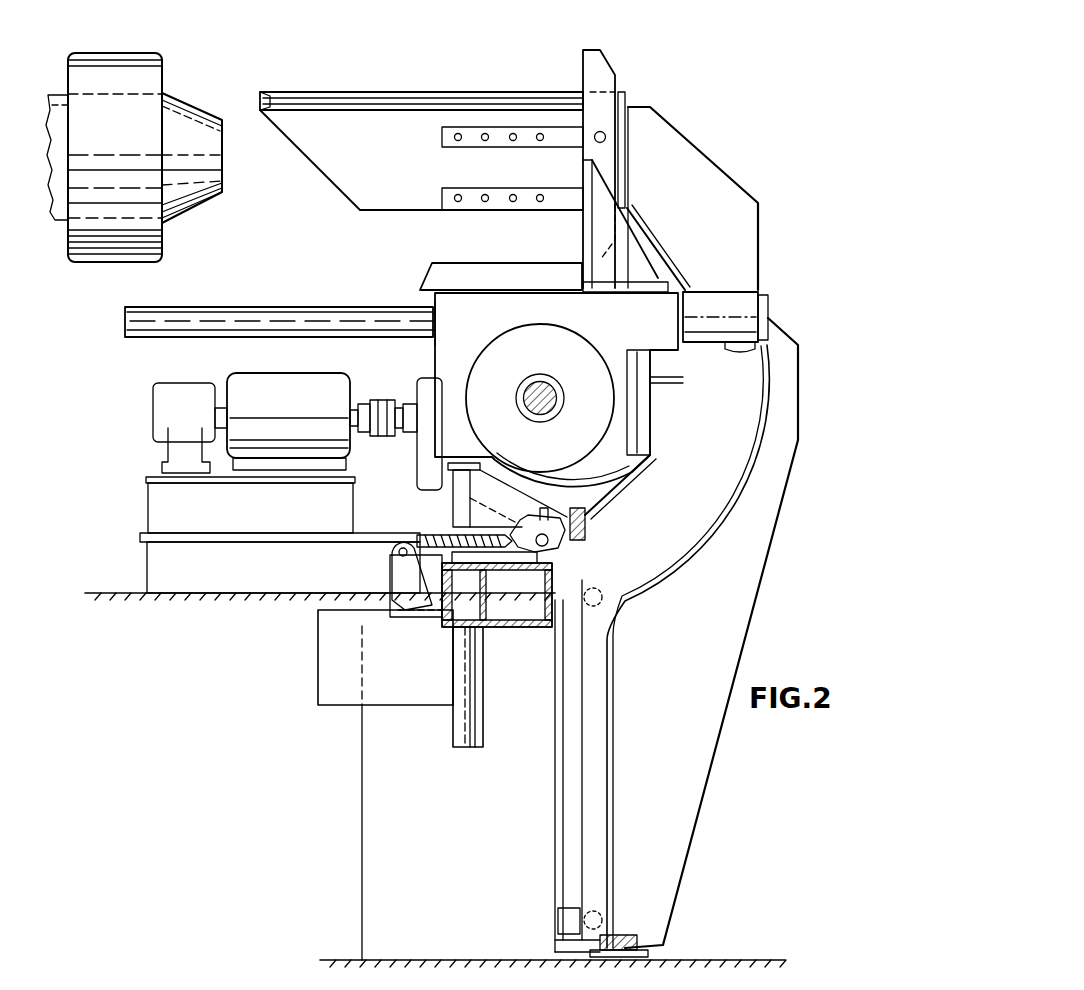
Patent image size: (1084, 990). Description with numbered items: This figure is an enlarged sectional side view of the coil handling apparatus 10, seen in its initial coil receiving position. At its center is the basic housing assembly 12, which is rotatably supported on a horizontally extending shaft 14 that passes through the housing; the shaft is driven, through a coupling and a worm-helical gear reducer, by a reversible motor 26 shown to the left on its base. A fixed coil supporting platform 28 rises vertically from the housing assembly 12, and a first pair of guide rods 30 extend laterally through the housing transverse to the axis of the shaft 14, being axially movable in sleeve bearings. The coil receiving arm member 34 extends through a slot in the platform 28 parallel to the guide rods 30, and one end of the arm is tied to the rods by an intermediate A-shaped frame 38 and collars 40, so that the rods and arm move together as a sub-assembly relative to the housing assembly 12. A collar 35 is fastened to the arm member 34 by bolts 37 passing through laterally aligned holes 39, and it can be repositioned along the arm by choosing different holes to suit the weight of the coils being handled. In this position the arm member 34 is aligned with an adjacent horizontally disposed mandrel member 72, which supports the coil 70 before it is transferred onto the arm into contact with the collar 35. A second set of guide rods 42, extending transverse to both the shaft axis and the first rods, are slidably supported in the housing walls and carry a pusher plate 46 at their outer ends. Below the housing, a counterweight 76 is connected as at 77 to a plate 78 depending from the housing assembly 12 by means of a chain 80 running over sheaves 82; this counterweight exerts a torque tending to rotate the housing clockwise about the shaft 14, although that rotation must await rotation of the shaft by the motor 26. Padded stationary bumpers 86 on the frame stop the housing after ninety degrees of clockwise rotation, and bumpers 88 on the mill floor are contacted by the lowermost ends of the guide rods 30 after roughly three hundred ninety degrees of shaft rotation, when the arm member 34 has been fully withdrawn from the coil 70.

The coil handling apparatus 10 is at (383, 293).
The housing assembly 12 is at (446, 362).
The shaft 14 is at (534, 388).
The reversible motor 26 is at (285, 388).
The coil supporting platform 28 is at (642, 246).
The guide rods 30 is at (229, 316).
The coil receiving arm member 34 is at (340, 106).
The collar 35 is at (604, 72).
The bolts 37 is at (605, 132).
The A-shaped frame 38 is at (707, 178).
The holes 39 is at (482, 141).
The collars 40 is at (745, 320).
The guide rods 42 is at (458, 735).
The pusher plate 46 is at (487, 274).
The coil 70 is at (127, 60).
The mandrel member 72 is at (178, 105).
The counterweight 76 is at (320, 653).
The connection 77 is at (566, 545).
The plate 78 is at (455, 500).
The chain 80 is at (390, 577).
The sheaves 82 is at (392, 550).
The padded stationary bumpers 86 is at (588, 528).
The bumpers 88 is at (620, 936).